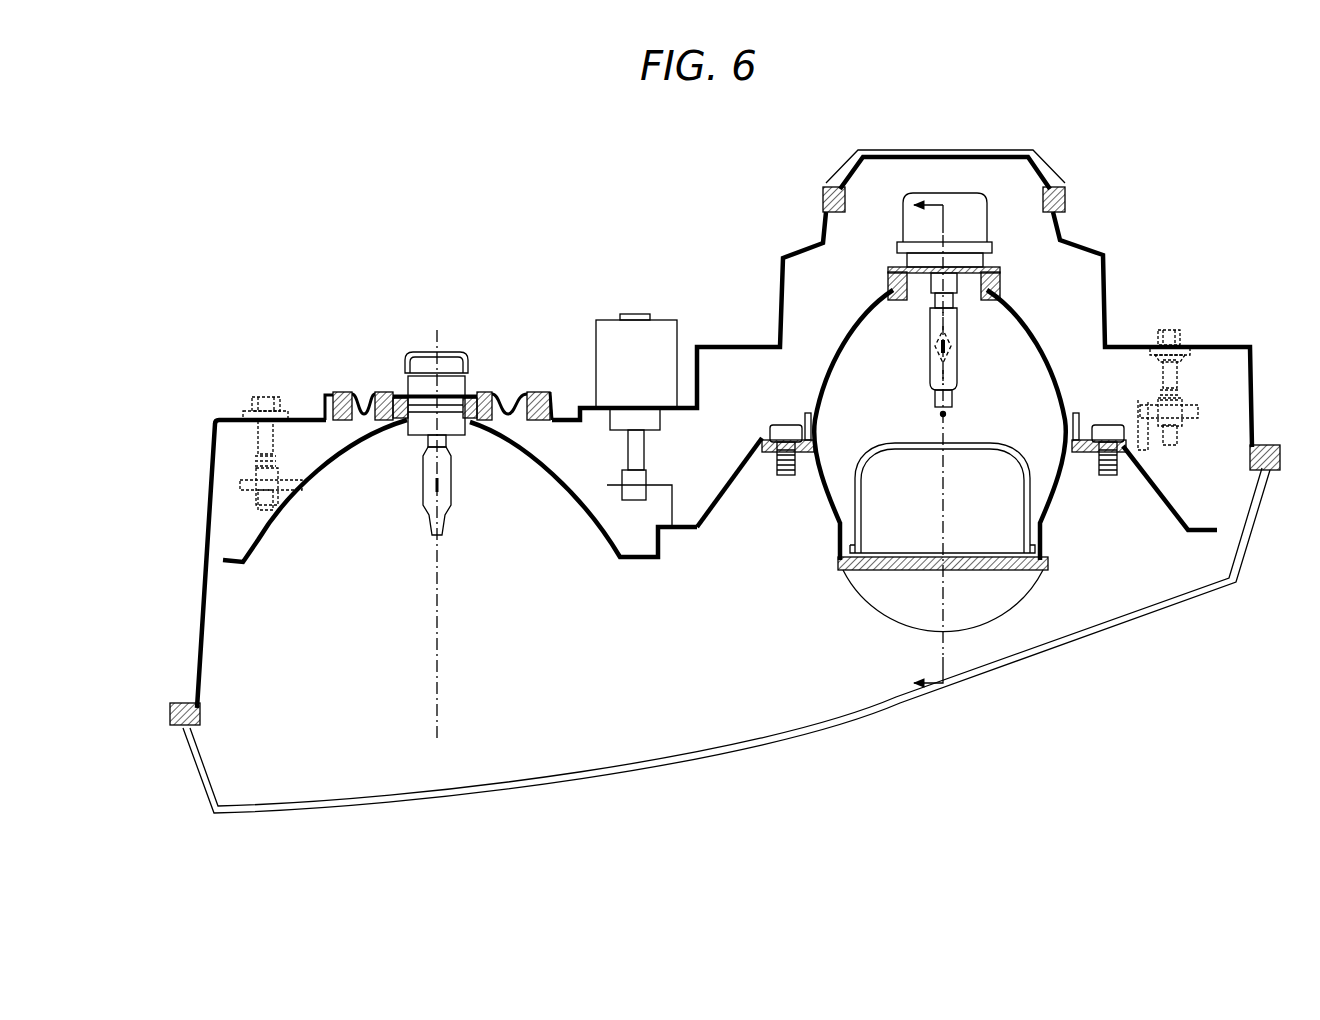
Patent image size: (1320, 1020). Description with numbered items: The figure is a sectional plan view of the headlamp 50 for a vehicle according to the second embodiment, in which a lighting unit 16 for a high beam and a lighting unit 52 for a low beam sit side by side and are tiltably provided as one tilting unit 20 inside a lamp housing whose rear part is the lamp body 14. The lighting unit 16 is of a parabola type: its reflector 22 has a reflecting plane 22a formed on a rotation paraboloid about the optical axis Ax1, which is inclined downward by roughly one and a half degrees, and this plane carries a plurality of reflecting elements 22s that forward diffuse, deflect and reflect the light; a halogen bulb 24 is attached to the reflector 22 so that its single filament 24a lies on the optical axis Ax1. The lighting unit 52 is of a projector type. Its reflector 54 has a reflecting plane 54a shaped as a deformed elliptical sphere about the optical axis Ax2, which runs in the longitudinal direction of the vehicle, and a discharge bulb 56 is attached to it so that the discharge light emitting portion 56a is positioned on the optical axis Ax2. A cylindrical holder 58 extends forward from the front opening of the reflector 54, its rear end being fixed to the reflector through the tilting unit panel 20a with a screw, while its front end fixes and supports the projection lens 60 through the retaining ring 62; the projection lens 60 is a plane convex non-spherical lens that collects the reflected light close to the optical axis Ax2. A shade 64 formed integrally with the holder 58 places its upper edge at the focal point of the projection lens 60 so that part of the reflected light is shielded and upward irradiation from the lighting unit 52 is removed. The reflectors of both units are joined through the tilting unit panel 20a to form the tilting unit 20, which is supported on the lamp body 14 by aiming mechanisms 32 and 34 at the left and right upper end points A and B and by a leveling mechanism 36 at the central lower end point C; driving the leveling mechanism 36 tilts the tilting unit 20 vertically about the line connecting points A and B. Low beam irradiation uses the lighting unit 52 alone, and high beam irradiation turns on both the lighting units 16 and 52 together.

The headlamp for a vehicle 50 is at (380, 233).
The lamp body 14 is at (736, 342).
The lighting unit for a high beam 16 is at (381, 628).
The tilting unit 20 is at (690, 600).
The tilting unit panel 20a is at (715, 500).
The reflector 22 is at (547, 448).
The reflecting plane 22a is at (288, 505).
The reflecting elements 22s is at (340, 462).
The halogen bulb 24 is at (452, 518).
The filament 24a is at (446, 483).
The aiming mechanism 32 is at (258, 446).
The aiming mechanism 34 is at (1183, 388).
The leveling mechanism 36 is at (608, 318).
The lighting unit for a low beam 52 is at (815, 548).
The reflector 54 is at (1047, 333).
The reflecting plane 54a is at (866, 330).
The discharge bulb 56 is at (963, 371).
The discharge light emitting portion 56a is at (955, 343).
The holder 58 is at (1057, 493).
The projection lens 60 is at (1012, 578).
The retaining ring 62 is at (1048, 565).
The shade 64 is at (917, 443).
The left upper end point A is at (278, 465).
The right upper end point B is at (1157, 396).
The central lower end point C is at (642, 470).
The optical axis Ax1 is at (437, 688).
The optical axis Ax2 is at (944, 600).